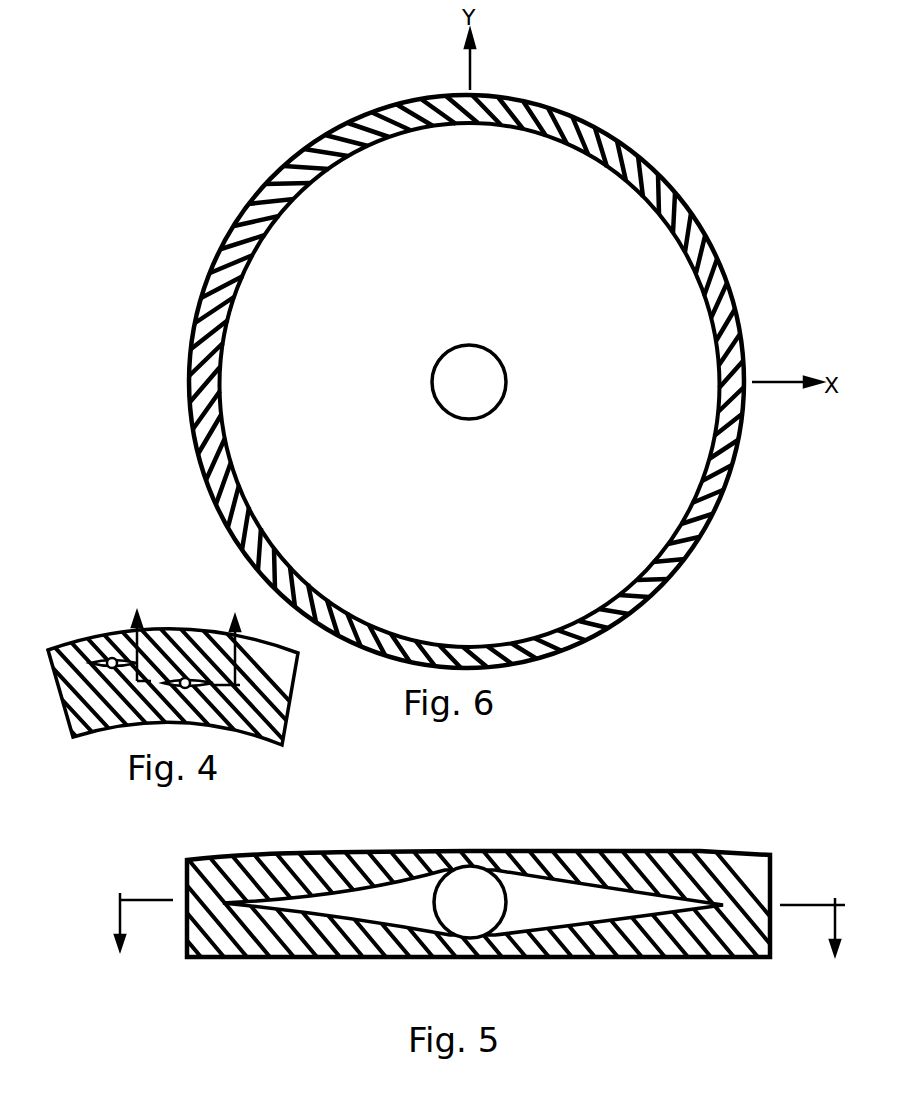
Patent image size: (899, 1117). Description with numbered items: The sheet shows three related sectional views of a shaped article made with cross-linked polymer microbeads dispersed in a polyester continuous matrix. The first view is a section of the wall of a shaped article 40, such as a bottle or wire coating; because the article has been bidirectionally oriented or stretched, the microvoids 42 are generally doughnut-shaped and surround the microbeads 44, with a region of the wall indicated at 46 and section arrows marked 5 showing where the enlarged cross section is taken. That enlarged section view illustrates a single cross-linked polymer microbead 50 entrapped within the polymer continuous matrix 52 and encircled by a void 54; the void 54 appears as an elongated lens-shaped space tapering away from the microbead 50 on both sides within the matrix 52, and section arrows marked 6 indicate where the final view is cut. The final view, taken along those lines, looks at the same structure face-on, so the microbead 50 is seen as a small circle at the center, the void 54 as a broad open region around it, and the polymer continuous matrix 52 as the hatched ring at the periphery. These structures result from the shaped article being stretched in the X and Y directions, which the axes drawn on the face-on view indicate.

In FIG. 4, the shaped article 40 is at (165, 613).
In FIG. 4, the microvoids 42 is at (122, 660).
In FIG. 4, the microbeads 44 is at (108, 661).
In FIG. 4, the substrate region 46 is at (192, 647).
In FIG. 6, the microbead 50 is at (483, 378).
In FIG. 5, the microbead 50 is at (470, 888).
In FIG. 6, the polymer continuous matrix 52 is at (690, 232).
In FIG. 5, the polymer continuous matrix 52 is at (603, 863).
In FIG. 6, the void 54 is at (483, 296).
In FIG. 5, the void 54 is at (540, 900).
In FIG. 4, the section line 5- 5 is at (186, 634).
In FIG. 5, the section line 6- 6 is at (478, 939).